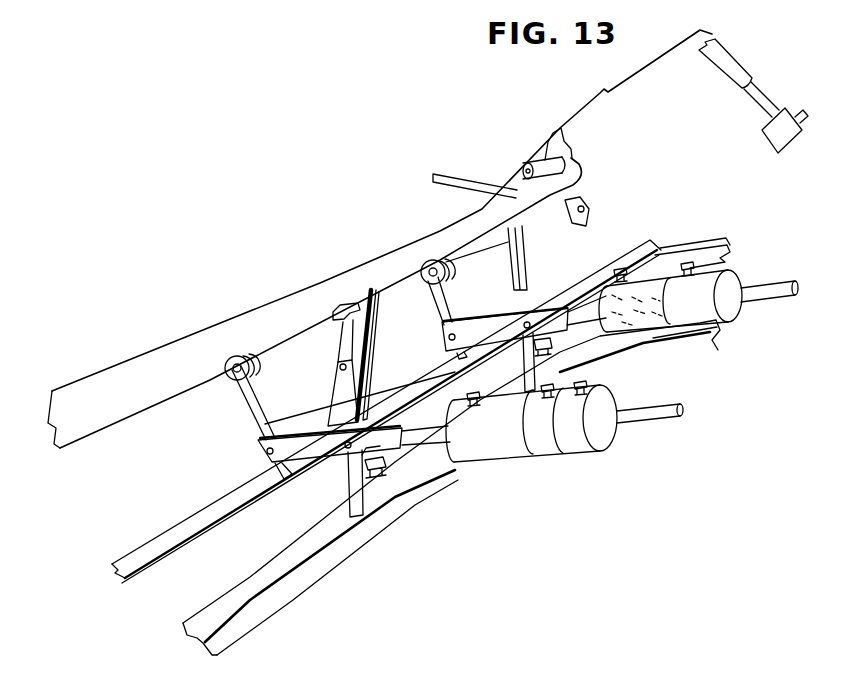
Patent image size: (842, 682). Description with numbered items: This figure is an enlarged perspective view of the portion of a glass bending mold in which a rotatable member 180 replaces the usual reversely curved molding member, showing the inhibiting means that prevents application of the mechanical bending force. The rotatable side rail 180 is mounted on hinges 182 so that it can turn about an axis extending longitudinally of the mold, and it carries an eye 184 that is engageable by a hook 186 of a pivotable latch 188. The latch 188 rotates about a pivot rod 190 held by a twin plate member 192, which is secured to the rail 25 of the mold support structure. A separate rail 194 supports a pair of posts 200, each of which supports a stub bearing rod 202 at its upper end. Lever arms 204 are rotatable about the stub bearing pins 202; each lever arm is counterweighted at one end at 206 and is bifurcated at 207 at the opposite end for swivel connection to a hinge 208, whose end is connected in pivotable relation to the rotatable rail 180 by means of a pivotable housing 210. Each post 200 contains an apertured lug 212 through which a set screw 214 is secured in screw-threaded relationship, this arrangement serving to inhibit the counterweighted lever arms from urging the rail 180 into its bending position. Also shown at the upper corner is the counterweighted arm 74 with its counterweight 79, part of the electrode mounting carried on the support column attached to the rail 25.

The rail 25 is at (386, 411).
The counterweighted arm 74 is at (745, 73).
The counterweight 79 is at (782, 138).
The rotatable member 180 is at (292, 291).
The hinges 182 is at (498, 180).
The eye 184 is at (335, 311).
The hook 186 is at (369, 300).
The pivotable latch 188 is at (333, 400).
The pivot rod 190 is at (340, 368).
The twin plate member 192 is at (368, 392).
The rail 194 is at (292, 592).
The posts 200 is at (347, 499).
The stub bearing rod 202 is at (346, 449).
The lever arms 204 is at (430, 438).
The counterweight 206 is at (653, 322).
The bifurcated end 207 is at (258, 448).
The hinge 208 is at (253, 405).
The pivotable housing 210 is at (235, 382).
The apertured lug 212 is at (387, 475).
The set screw 214 is at (395, 462).